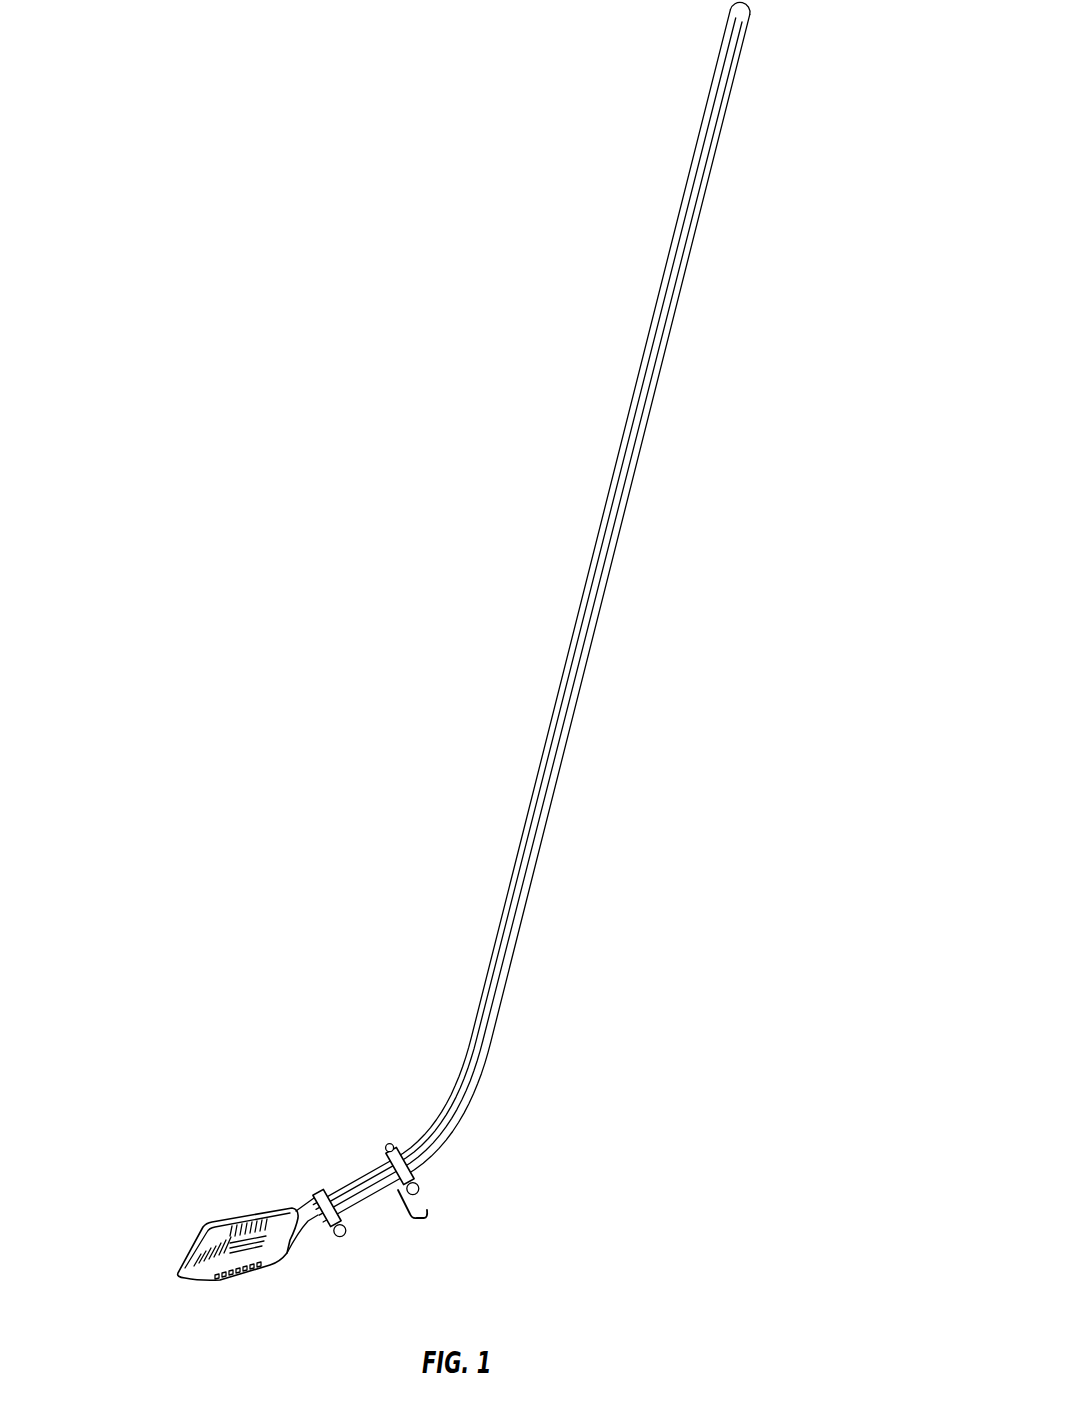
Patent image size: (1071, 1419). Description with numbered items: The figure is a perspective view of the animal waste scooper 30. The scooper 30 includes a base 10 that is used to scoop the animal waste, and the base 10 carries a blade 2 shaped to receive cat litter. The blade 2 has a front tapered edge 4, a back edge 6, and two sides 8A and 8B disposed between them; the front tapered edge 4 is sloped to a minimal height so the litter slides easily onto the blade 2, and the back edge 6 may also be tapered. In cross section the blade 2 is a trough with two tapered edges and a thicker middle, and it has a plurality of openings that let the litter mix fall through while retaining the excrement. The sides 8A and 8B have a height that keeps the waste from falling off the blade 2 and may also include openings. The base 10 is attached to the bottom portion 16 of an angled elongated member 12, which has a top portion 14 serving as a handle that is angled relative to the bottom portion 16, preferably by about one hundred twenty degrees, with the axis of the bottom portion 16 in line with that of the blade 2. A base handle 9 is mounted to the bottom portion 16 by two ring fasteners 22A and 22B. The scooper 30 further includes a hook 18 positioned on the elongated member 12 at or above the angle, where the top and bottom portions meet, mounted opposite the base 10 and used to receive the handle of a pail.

The blade 2 is at (224, 1243).
The front tapered edge 4 is at (186, 1252).
The back edge 6 is at (293, 1235).
The side 8A is at (254, 1270).
The side 8B is at (256, 1222).
The base handle 9 is at (371, 1174).
The base 10 is at (168, 1212).
The angled elongated member 12 is at (773, 3).
The top portion 14 is at (692, 157).
The bottom portion 16 is at (368, 1197).
The hook 18 is at (426, 1218).
The ring fastener 22A is at (387, 1146).
The ring fastener 22B is at (320, 1193).
The scooper 30 is at (730, 1316).